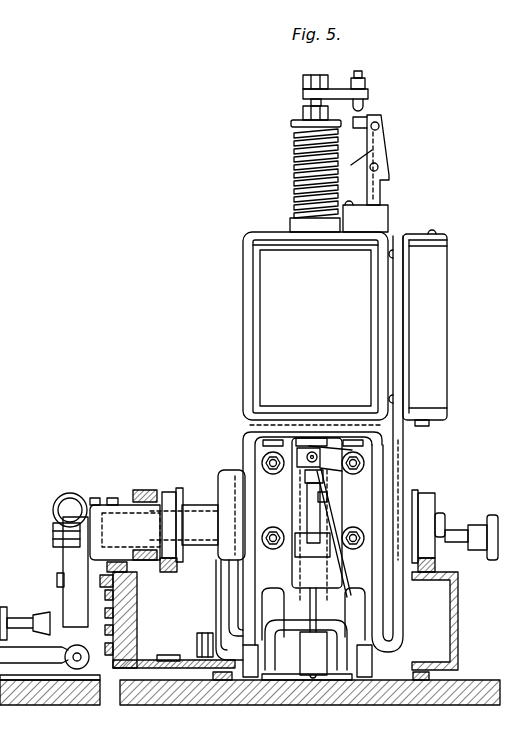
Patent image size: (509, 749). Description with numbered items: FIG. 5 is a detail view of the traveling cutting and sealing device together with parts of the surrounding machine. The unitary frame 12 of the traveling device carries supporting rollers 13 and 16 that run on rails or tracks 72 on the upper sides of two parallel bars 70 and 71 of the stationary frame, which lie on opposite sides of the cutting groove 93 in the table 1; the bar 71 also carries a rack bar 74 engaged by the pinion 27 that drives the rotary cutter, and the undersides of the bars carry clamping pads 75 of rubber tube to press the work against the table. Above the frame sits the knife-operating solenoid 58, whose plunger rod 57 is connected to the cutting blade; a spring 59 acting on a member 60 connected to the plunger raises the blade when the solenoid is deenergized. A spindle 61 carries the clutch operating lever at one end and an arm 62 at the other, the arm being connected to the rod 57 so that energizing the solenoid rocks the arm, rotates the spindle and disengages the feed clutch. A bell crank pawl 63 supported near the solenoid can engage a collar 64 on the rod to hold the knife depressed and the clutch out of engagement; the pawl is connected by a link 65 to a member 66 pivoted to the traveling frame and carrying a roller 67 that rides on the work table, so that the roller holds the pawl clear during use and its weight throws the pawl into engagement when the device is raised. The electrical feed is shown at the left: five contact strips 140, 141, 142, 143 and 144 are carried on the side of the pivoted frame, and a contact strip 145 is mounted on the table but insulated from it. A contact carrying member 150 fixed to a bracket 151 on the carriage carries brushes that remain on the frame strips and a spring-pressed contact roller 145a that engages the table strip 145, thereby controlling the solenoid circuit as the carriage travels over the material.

The table 1 is at (470, 683).
The unitary frame 12 is at (230, 468).
The supporting roller 13 is at (430, 493).
The supporting roller 16 is at (176, 492).
The pinion 27 is at (150, 495).
The rod 57 is at (308, 600).
The solenoid 58 is at (262, 349).
The spring 59 is at (293, 186).
The member 60 is at (291, 128).
The spindle 61 is at (358, 461).
The arm 62 is at (324, 468).
The bell crank pawl 63 is at (305, 512).
The collar 64 is at (296, 552).
The link 65 is at (367, 615).
The member 66 is at (343, 683).
The roller 67 is at (310, 683).
The bar 70 is at (460, 617).
The bar 71 is at (138, 622).
The rails or tracks 72 is at (176, 566).
The rack bar 74 is at (132, 568).
The clamping pads 75 is at (225, 683).
The cutting groove 93 is at (316, 680).
The contact strip 140 is at (105, 576).
The contact strip 141 is at (105, 592).
The contact strip 142 is at (105, 609).
The contact strip 143 is at (105, 627).
The contact strip 144 is at (105, 646).
The contact strip 145 is at (70, 683).
The contact roller 145a is at (92, 683).
The contact carrying member 150 is at (62, 503).
The bracket 151 is at (124, 502).